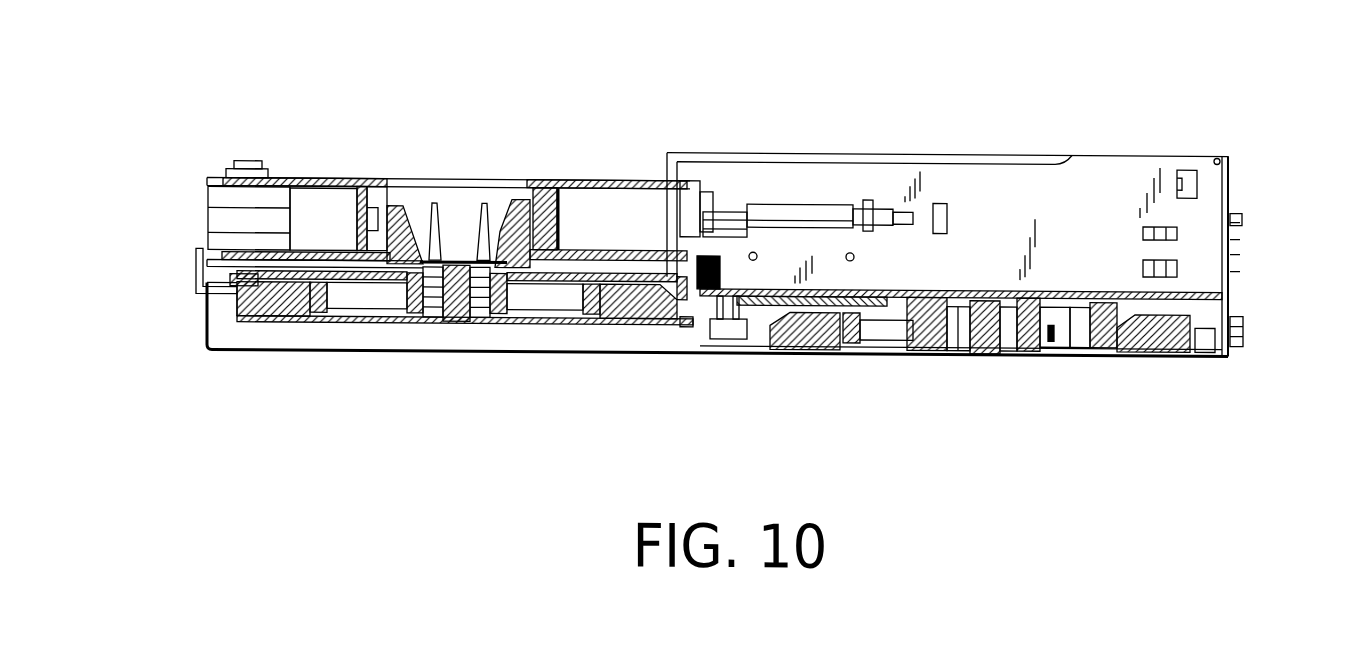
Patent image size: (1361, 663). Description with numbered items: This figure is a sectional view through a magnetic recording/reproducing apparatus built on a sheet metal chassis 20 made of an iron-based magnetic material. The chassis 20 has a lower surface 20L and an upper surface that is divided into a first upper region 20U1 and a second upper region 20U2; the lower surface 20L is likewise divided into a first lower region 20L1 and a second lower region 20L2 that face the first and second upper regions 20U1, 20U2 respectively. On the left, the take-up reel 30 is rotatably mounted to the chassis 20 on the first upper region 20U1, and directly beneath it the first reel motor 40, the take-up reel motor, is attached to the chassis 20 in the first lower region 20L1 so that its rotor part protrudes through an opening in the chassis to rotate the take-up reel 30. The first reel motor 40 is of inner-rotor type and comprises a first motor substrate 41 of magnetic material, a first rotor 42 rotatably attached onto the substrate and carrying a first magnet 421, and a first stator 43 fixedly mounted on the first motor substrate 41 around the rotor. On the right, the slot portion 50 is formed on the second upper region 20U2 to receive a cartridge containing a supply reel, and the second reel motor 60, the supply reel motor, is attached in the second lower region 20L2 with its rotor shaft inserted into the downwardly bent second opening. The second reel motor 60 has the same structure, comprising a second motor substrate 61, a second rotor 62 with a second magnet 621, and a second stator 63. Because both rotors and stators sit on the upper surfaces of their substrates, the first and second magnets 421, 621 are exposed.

The chassis 20 is at (560, 184).
The lower surface 20L is at (703, 338).
The first upper region 20U1 is at (213, 281).
The first lower region 20L1 is at (220, 290).
The second upper region 20U2 is at (1230, 289).
The second lower region 20L2 is at (1230, 348).
The take-up reel 30 is at (360, 182).
The first reel motor 40 is at (543, 339).
The first motor substrate 41 is at (368, 340).
The first rotor 42 is at (422, 340).
The first magnet 421 is at (317, 341).
The first stator 43 is at (258, 341).
The slot portion 50 is at (990, 178).
The second reel motor 60 is at (920, 344).
The second motor substrate 61 is at (1060, 350).
The second rotor 62 is at (953, 346).
The second magnet 621 is at (850, 344).
The second stator 63 is at (807, 344).